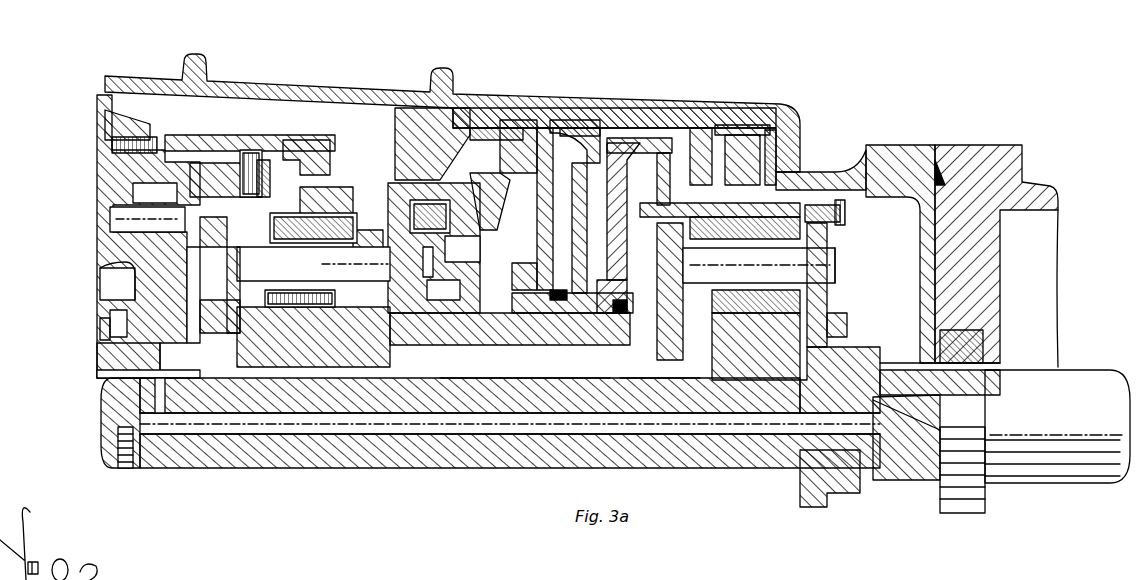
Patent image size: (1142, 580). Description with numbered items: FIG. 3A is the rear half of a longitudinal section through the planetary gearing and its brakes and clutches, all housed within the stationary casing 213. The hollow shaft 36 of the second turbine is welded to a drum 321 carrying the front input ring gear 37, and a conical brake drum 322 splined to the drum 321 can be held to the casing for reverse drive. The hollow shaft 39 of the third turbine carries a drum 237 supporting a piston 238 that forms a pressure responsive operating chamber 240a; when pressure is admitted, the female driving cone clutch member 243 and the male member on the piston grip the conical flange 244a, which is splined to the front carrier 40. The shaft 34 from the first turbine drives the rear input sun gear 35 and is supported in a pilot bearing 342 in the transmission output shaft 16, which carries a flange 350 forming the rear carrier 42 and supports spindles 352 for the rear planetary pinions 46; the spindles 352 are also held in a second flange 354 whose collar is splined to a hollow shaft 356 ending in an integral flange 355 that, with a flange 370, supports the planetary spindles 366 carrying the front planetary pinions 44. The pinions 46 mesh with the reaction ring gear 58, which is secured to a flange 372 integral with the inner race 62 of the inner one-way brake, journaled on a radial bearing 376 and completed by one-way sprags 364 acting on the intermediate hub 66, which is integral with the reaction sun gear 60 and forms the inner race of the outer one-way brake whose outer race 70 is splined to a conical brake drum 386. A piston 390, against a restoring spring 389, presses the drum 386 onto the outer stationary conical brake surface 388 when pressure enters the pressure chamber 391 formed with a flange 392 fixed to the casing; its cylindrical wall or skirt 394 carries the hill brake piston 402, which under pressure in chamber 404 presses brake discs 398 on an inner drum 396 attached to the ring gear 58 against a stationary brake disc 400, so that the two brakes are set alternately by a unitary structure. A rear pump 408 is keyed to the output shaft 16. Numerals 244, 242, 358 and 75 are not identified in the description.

The stationary casing 213 is at (378, 96).
The conical brake drum 322 is at (138, 120).
The bearing carrier 244 is at (197, 180).
The female driving cone clutch member 243 is at (245, 163).
The drum 321 is at (273, 134).
The front input ring gear 37 is at (337, 173).
The conical flange 244a is at (262, 187).
The front planetary pinions 44 is at (352, 195).
The conical brake drum 386 is at (410, 150).
The outer stationary conical brake surface 388 is at (445, 97).
The restoring spring 389 is at (490, 110).
The piston 390 is at (537, 107).
The pressure chamber 391 is at (587, 107).
The flange 392 is at (653, 110).
The chamber 404 is at (586, 150).
The piston 402 is at (637, 167).
The intermediate hub 66 is at (483, 243).
The outer race 70 is at (473, 212).
The hub 358 is at (463, 213).
The flange 370 is at (383, 232).
The piston 238 is at (285, 264).
The integral flange 355 is at (313, 264).
The flange plate 242 is at (203, 265).
The front carrier 40 is at (233, 280).
The planetary spindles 366 is at (300, 345).
The one-way sprags 364 is at (427, 320).
The pressure responsive operating chamber 240a is at (108, 264).
The hollow shaft 36 is at (110, 337).
The drum 237 is at (100, 357).
The hollow shaft 39 is at (98, 373).
The shaft 34 is at (123, 462).
The reaction sun gear 60 is at (352, 375).
The hollow shaft 356 is at (468, 375).
The cylindrical wall or skirt 394 is at (527, 375).
The inner race 62 is at (577, 375).
The radial bearing 376 is at (680, 375).
The stationary brake disc 400 is at (742, 130).
The brake discs 398 is at (782, 130).
The inner drum 396 is at (793, 170).
The reaction ring gear 58 is at (840, 210).
The spring 75 is at (847, 220).
The flange 372 is at (657, 243).
The second flange 354 is at (690, 275).
The rear carrier 42 is at (844, 257).
The rear planetary pinions 46 is at (826, 296).
The flange 350 is at (848, 318).
The spindles 352 is at (765, 270).
The rear input sun gear 35 is at (790, 362).
The pump 408 is at (985, 335).
The pilot bearing 342 is at (860, 485).
The transmission output shaft 16 is at (1082, 392).